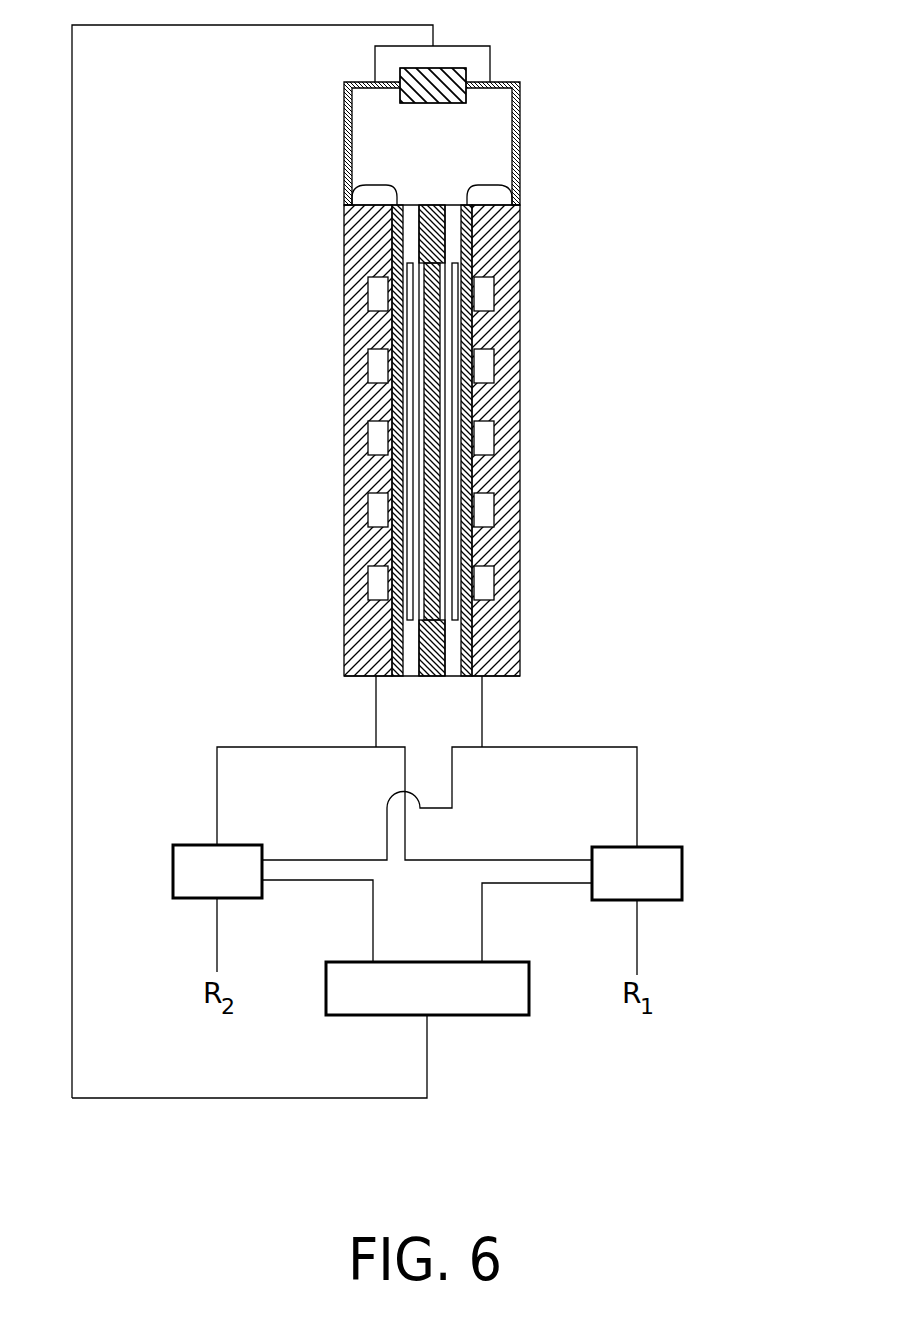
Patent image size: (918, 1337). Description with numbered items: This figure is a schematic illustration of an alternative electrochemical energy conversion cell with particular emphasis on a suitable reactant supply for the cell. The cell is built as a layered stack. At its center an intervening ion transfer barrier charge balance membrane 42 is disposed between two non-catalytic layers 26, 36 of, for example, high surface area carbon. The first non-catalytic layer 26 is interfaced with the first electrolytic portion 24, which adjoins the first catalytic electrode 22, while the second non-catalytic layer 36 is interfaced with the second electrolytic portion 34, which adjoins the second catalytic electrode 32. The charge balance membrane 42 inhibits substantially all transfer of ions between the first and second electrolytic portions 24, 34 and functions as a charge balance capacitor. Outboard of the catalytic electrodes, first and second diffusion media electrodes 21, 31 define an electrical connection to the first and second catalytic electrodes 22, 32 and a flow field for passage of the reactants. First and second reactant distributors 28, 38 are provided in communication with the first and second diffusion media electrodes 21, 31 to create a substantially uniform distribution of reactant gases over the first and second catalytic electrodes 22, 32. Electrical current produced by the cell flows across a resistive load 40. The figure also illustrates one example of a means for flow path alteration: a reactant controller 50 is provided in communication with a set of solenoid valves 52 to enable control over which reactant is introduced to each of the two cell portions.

The first diffusion media electrode 21 is at (520, 186).
The first catalytic electrode 22 is at (494, 293).
The first electrolytic portion 24 is at (460, 205).
The first non-catalytic layer 26 is at (466, 360).
The first reactant distributor 28 is at (521, 236).
The second diffusion media electrode 31 is at (344, 186).
The second catalytic electrode 32 is at (370, 293).
The second electrolytic portion 34 is at (406, 205).
The second non-catalytic layer 36 is at (398, 360).
The second reactant distributor 38 is at (343, 236).
The resistive load 40 is at (462, 68).
The charge balance membrane 42 is at (430, 676).
The reactant controller 50 is at (488, 1015).
The solenoid valves 52 is at (177, 845).